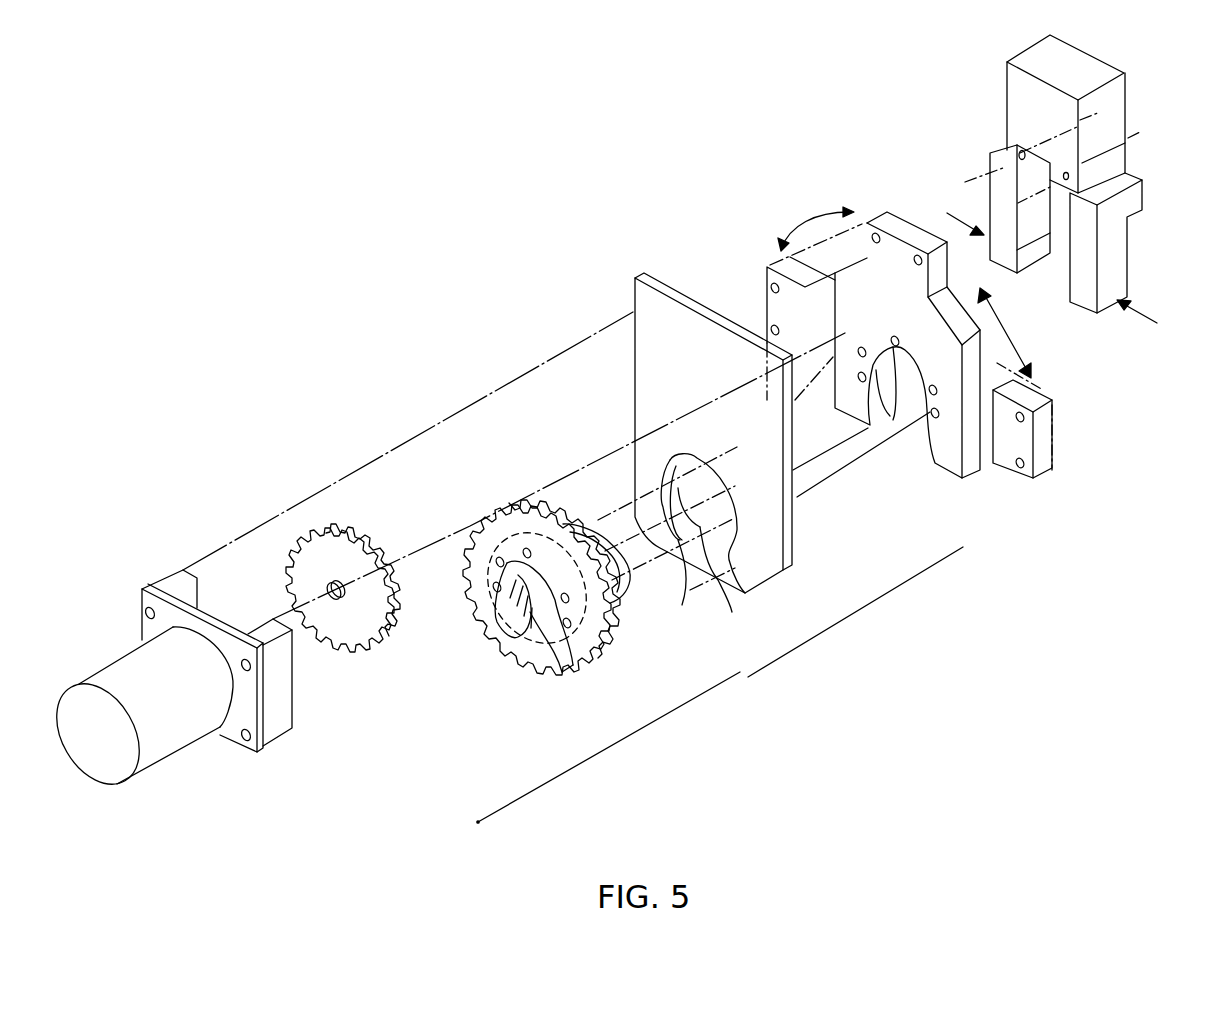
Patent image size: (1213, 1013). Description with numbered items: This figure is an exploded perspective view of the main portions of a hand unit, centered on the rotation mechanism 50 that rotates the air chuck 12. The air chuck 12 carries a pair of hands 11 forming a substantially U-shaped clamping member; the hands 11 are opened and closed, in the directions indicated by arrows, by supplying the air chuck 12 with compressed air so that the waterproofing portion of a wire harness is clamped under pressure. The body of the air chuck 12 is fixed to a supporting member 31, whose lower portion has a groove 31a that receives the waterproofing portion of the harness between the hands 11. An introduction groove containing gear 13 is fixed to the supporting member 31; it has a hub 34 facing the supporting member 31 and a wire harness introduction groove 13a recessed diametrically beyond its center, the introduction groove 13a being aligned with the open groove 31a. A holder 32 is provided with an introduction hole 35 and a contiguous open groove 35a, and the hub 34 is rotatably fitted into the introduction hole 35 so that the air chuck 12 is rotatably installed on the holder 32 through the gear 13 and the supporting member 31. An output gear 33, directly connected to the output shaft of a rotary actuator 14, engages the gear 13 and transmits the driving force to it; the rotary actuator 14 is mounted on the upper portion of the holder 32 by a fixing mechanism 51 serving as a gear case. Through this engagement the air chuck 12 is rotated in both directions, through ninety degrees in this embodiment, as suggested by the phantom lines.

The hands 11 is at (1118, 250).
The air chuck 12 is at (1067, 57).
The introduction groove containing gear 13 is at (593, 672).
The wire harness introduction groove 13a is at (544, 638).
The rotary actuator 14 is at (108, 663).
The supporting member 31 is at (943, 472).
The groove 31a is at (893, 422).
The holder 32 is at (775, 582).
The output gear 33 is at (386, 645).
The hub 34 is at (640, 610).
The introduction hole 35 is at (727, 597).
The open groove 35a is at (690, 552).
The rotation mechanism 50 is at (573, 567).
The fixing mechanism 51 is at (280, 722).